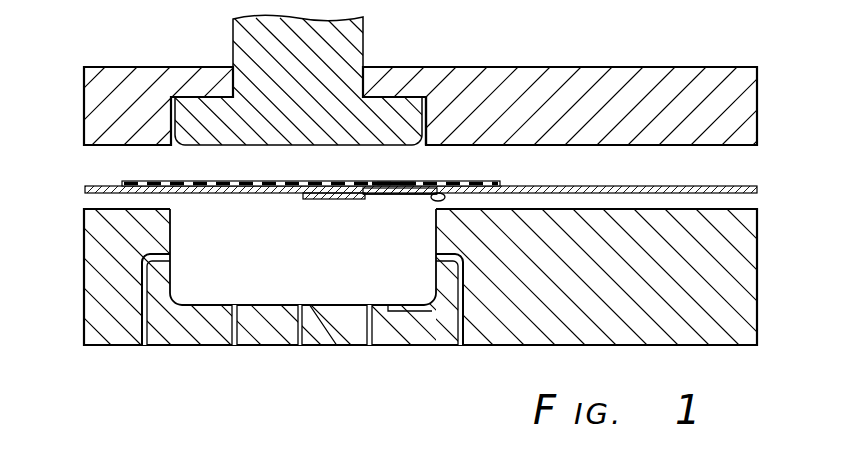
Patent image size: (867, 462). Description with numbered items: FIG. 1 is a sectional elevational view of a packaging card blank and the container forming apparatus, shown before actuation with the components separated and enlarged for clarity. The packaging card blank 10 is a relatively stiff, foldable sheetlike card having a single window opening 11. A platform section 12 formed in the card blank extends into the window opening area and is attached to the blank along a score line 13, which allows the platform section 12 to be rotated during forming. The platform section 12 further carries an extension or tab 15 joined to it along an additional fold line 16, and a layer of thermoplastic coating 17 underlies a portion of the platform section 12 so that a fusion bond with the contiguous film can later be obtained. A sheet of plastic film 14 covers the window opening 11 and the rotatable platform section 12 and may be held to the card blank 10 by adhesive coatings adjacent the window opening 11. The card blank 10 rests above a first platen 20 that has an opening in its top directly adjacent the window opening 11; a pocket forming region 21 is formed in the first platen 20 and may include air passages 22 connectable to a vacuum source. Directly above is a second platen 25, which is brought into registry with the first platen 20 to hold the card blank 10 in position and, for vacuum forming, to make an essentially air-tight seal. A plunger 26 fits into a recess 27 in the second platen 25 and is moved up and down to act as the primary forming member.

The packaging card blank 10 is at (384, 207).
The window opening 11 is at (227, 193).
The platform section 12 is at (393, 195).
The score line 13 is at (438, 197).
The sheet of plastic film 14 is at (135, 182).
The extension or tab 15 is at (328, 200).
The additional fold line 16 is at (367, 200).
The layer of thermoplastic coating 17 is at (403, 183).
The first platen 20 is at (738, 265).
The pocket forming region 21 is at (267, 285).
The air passages 22 is at (237, 337).
The second platen 25 is at (738, 108).
The plunger 26 is at (233, 28).
The recess 27 is at (405, 97).